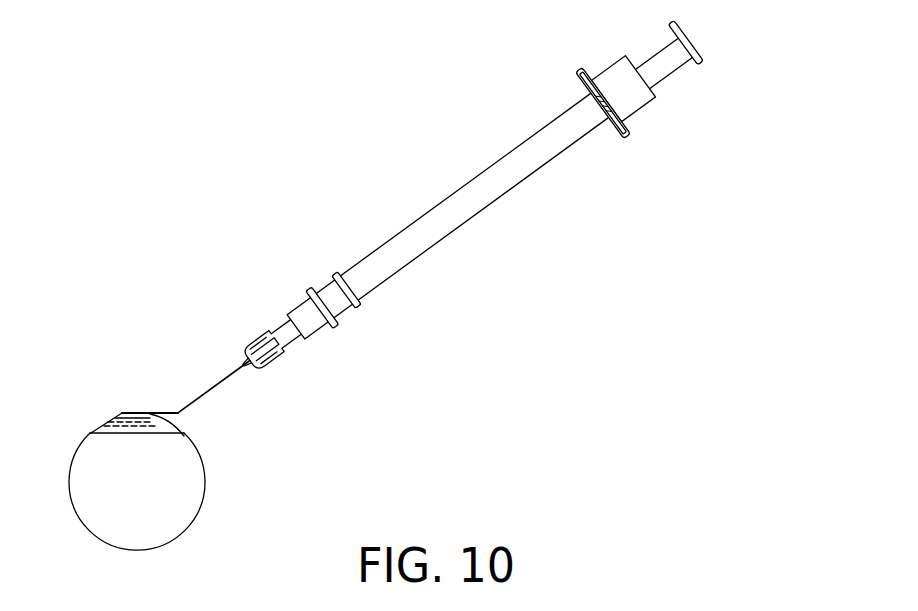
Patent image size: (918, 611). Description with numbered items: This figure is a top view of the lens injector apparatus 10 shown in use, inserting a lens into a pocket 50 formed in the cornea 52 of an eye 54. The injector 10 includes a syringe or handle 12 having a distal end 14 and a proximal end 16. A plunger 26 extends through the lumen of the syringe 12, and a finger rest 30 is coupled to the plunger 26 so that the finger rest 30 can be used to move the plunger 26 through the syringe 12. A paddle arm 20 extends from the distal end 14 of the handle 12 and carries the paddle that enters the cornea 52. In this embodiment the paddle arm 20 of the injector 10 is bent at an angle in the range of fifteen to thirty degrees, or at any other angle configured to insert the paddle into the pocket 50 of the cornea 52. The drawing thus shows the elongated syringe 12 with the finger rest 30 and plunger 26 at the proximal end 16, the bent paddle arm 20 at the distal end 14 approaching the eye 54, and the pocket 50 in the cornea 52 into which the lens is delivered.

The lens injector apparatus 10 is at (349, 173).
The syringe 12 is at (473, 213).
The distal end 14 is at (293, 354).
The proximal end 16 is at (600, 128).
The paddle arm 20 is at (222, 388).
The plunger 26 is at (675, 65).
The finger rest 30 is at (703, 57).
The pocket 50 is at (145, 412).
The cornea 52 is at (110, 413).
The eye 54 is at (91, 456).